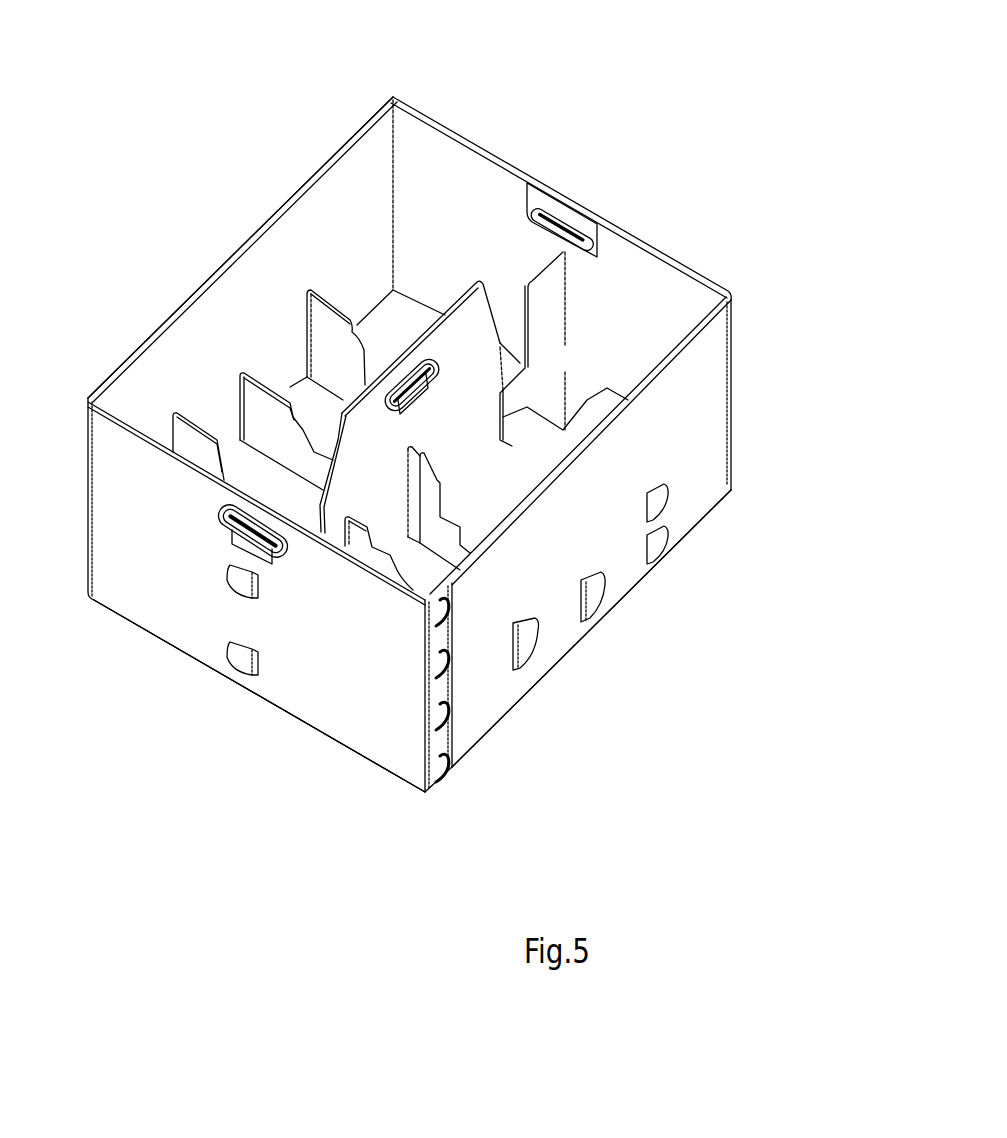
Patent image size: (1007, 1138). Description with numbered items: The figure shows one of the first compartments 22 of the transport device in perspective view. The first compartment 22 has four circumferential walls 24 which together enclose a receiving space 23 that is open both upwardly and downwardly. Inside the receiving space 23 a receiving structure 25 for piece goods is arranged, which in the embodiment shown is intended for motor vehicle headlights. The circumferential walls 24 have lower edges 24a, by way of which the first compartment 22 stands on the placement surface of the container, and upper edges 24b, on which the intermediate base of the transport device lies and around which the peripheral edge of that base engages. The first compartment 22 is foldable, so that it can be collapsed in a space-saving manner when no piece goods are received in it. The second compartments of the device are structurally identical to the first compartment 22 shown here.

The first compartment 22 is at (585, 128).
The receiving space 23 is at (457, 194).
The circumferential wall 24 is at (204, 310).
The lower edge 24a is at (648, 572).
The upper edge 24b is at (130, 357).
The receiving structure 25 is at (407, 357).